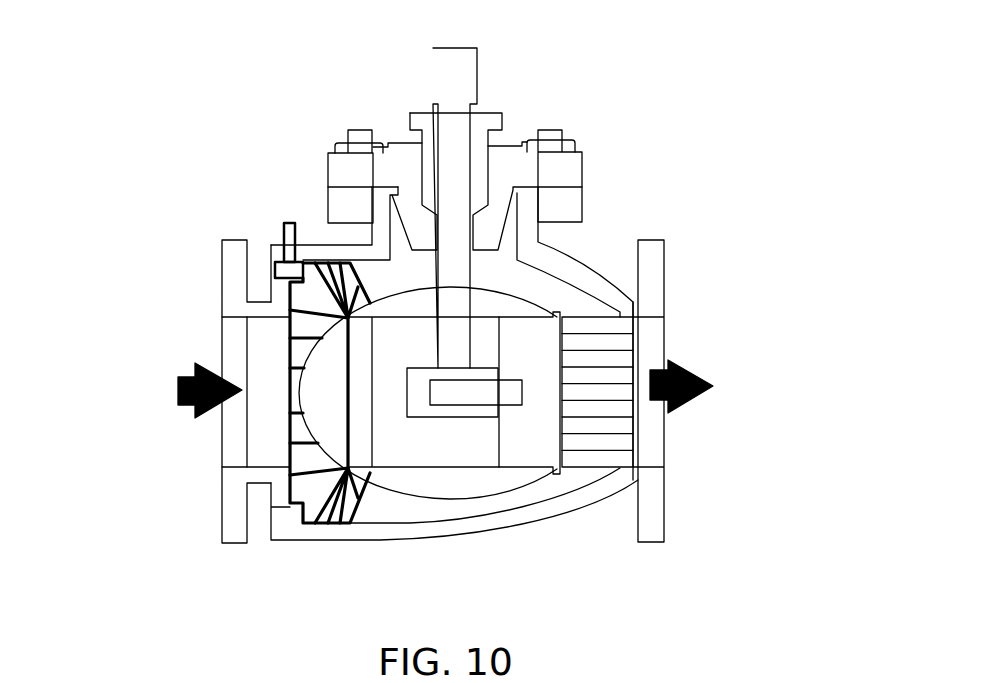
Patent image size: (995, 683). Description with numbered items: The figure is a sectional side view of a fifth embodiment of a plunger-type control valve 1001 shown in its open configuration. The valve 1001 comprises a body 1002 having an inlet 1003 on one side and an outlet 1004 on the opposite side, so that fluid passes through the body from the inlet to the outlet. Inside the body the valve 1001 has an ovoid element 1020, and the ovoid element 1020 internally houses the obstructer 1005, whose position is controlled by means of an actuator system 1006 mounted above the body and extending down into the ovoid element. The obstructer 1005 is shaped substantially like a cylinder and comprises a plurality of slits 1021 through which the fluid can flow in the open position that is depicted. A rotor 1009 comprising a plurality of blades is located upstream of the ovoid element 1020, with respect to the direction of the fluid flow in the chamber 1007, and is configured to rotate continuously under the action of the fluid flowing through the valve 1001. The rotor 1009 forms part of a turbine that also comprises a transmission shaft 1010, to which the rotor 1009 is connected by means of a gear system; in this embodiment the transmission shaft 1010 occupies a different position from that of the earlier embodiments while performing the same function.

The control valve 1001 is at (608, 80).
The body 1002 is at (319, 211).
The inlet 1003 is at (233, 348).
The outlet 1004 is at (653, 348).
The obstructer 1005 is at (533, 440).
The actuator system 1006 is at (460, 130).
The chamber 1007 is at (428, 516).
The rotor 1009 is at (303, 455).
The transmission shaft 1010 is at (287, 245).
The ovoid element 1020 is at (403, 427).
The slits 1021 is at (592, 345).